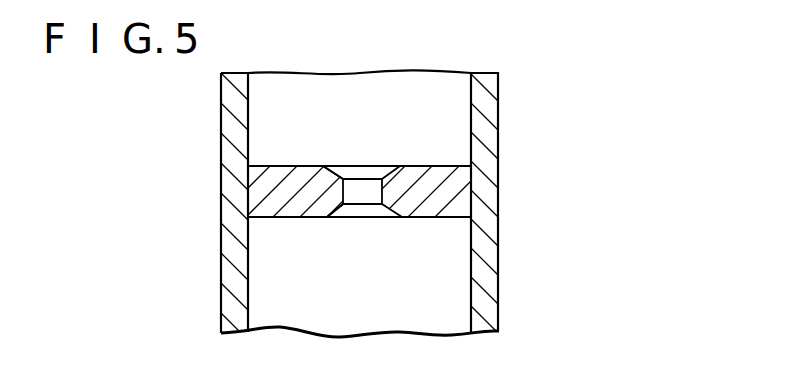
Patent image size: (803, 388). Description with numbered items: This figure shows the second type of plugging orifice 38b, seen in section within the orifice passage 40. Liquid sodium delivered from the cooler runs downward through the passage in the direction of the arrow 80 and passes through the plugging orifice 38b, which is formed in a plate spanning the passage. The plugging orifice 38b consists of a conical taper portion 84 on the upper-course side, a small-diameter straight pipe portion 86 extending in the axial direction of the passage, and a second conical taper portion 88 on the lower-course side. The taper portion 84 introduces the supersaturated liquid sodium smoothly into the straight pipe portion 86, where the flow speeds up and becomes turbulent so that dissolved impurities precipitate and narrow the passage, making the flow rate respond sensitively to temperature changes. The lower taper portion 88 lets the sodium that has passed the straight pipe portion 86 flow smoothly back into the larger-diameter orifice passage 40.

The orifice passage 40 is at (436, 68).
The arrow 80 is at (358, 125).
The plugging orifice 38b is at (347, 125).
The conical taper portion 84 is at (388, 169).
The straight pipe portion 86 is at (344, 179).
The taper portion 88 is at (336, 217).